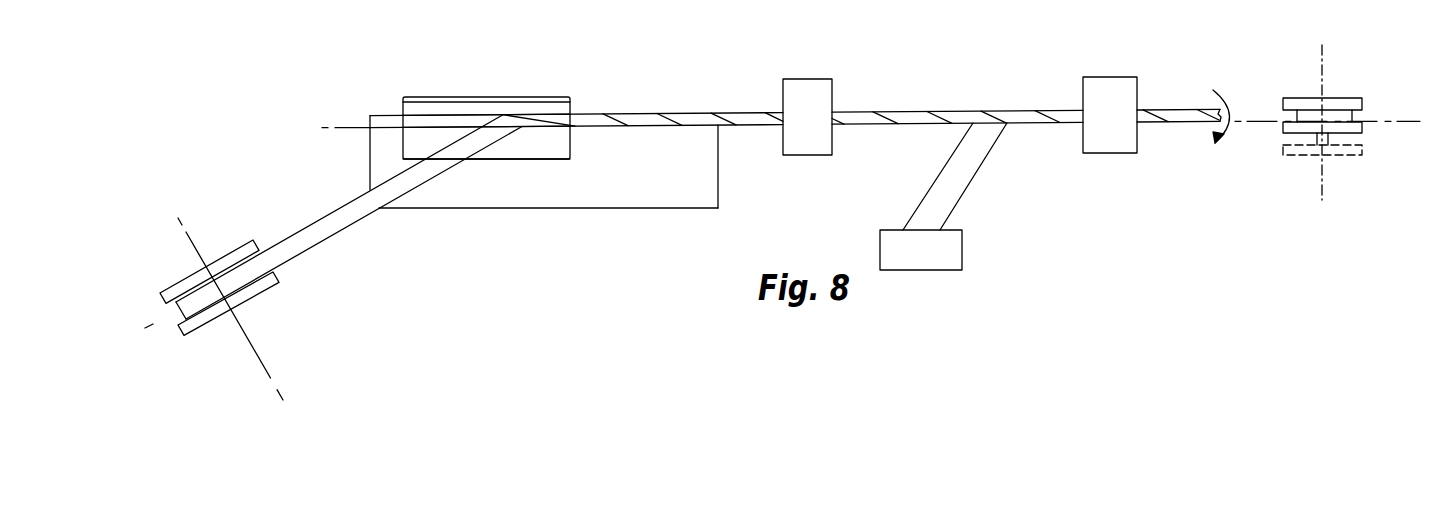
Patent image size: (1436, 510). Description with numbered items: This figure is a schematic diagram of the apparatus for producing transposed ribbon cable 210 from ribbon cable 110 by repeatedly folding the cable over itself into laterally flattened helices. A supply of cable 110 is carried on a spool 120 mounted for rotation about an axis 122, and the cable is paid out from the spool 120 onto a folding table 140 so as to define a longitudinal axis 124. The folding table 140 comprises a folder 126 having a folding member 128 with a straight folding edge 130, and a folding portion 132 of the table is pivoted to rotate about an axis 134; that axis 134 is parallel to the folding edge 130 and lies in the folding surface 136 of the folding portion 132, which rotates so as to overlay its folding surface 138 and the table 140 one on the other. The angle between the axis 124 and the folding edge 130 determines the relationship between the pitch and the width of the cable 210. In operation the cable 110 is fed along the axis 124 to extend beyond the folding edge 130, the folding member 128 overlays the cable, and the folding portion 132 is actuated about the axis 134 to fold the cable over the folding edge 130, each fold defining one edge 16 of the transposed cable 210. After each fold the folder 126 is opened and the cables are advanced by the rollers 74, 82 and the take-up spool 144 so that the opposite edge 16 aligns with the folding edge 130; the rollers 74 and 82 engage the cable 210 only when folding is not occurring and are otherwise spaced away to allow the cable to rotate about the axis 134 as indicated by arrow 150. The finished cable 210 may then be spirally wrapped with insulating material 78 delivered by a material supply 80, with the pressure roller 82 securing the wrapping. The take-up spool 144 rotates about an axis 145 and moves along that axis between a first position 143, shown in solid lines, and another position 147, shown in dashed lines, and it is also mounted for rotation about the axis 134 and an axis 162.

The edge 16 is at (907, 125).
The roller 74 is at (810, 148).
The insulating material 78 is at (968, 177).
The material supply 80 is at (955, 252).
The roller 82 is at (1112, 147).
The ribbon cable 110 is at (330, 238).
The spool 120 is at (228, 262).
The axis 122 is at (268, 378).
The longitudinal axis 124 is at (167, 326).
The folder 126 is at (416, 112).
The folding member 128 is at (492, 119).
The folding edge 130 is at (478, 113).
The folding portion 132 is at (467, 110).
The axis 134 is at (352, 129).
The folding surface 136 is at (553, 105).
The folding surface 138 is at (430, 110).
The folding table 140 is at (650, 186).
The first position 143 is at (1298, 102).
The take-up spool 144 is at (1343, 97).
The axis 145 is at (1323, 73).
The another position 147 is at (1285, 152).
The arrow 150 is at (1223, 128).
The axis 162 is at (1387, 123).
The transposed ribbon cable 210 is at (1160, 109).